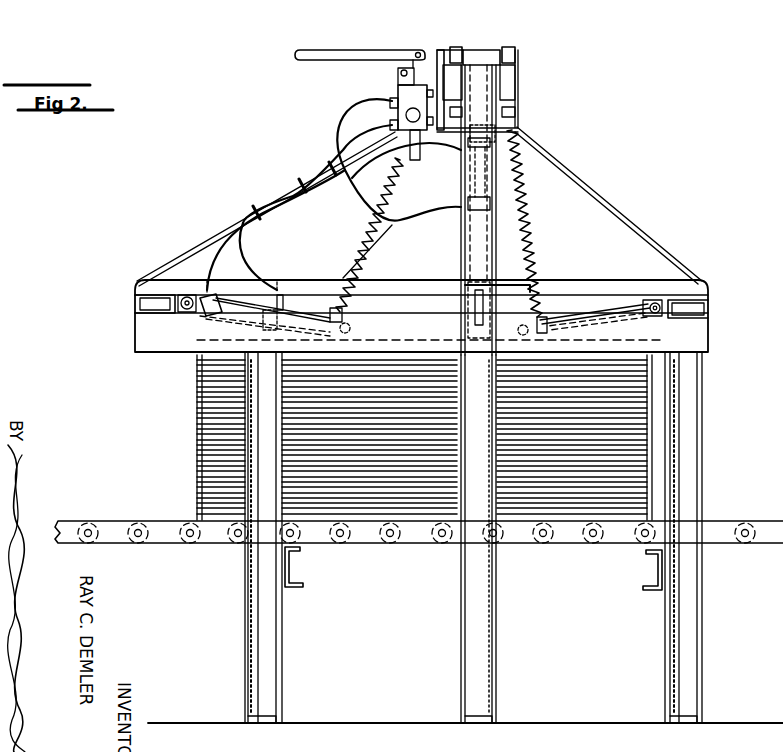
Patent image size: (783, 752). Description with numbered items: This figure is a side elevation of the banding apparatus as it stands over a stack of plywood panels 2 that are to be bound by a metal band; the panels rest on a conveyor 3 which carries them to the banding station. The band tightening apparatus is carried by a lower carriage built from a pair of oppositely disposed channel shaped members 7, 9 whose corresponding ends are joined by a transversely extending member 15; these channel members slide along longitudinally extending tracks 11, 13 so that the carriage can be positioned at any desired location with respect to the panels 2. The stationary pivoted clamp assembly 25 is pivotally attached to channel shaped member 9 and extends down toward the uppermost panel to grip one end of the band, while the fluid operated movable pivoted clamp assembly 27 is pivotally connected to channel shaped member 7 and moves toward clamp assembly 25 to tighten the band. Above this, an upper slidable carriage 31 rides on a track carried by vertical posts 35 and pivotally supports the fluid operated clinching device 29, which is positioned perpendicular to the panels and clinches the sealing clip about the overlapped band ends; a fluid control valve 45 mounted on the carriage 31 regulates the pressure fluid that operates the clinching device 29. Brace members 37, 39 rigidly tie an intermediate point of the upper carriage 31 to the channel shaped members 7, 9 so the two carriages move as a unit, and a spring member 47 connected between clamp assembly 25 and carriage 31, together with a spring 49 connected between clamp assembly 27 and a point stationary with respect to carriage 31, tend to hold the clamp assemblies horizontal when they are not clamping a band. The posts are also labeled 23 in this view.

The panels 2 is at (210, 442).
The conveyor 3 is at (170, 545).
The channel shaped member 7 is at (137, 302).
The channel shaped member 9 is at (710, 302).
The track 11 is at (136, 310).
The track 13 is at (698, 310).
The transversely extending member 15 is at (423, 287).
The side post 23 is at (248, 652).
The stationary pivoted clamp assembly 25 is at (594, 327).
The movable pivoted clamp assembly 27 is at (236, 327).
The clinching device 29 is at (462, 305).
The upper slidable carriage 31 is at (440, 46).
The vertical posts 35 is at (457, 660).
The brace member 37 is at (283, 203).
The brace member 39 is at (597, 195).
The fluid control valve 45 is at (397, 88).
The spring member 47 is at (530, 240).
The spring 49 is at (363, 243).